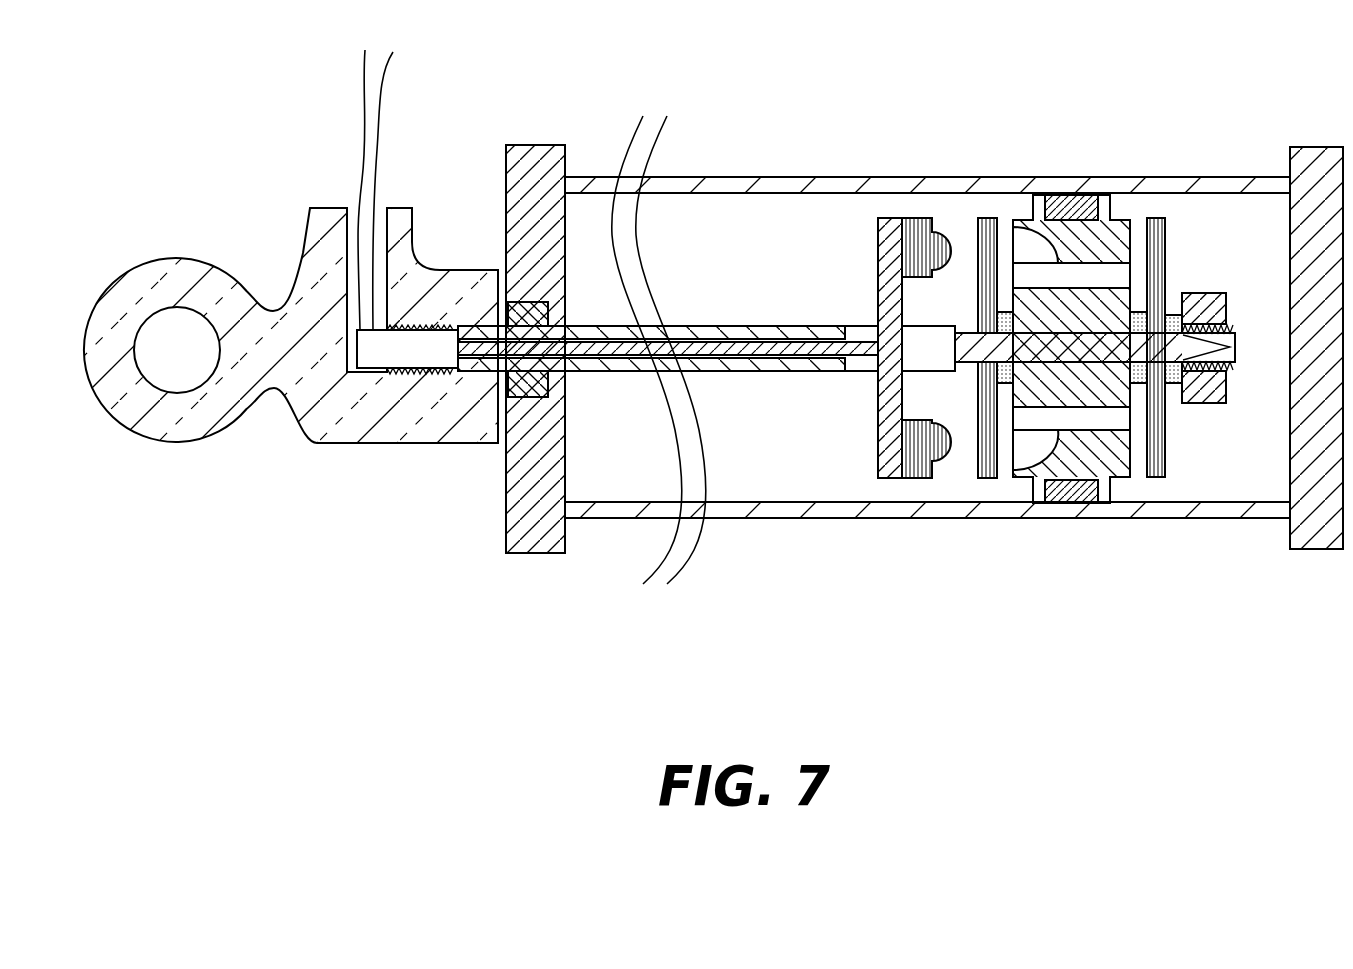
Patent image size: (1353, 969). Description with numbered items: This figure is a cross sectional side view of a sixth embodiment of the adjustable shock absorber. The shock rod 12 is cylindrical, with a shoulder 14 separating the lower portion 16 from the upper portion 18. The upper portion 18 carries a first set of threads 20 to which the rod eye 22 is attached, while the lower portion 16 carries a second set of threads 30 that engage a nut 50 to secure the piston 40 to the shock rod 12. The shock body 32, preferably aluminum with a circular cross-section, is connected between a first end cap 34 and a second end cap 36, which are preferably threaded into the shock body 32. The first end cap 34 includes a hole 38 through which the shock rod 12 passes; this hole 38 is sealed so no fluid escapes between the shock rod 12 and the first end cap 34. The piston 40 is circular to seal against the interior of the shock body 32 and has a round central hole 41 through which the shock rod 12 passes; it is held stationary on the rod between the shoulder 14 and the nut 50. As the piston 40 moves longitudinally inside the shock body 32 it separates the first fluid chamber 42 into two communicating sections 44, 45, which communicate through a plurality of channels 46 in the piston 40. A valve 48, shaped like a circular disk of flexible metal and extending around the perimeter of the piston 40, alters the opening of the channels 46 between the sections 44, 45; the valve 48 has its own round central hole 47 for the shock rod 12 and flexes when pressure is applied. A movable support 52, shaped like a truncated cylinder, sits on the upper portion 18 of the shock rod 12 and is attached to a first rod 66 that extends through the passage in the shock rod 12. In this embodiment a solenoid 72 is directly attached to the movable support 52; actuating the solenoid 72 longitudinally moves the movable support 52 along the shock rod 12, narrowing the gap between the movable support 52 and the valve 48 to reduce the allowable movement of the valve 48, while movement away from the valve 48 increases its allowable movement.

The shock rod 12 is at (701, 328).
The shoulder 14 is at (945, 372).
The lower portion 16 is at (1236, 350).
The upper portion 18 is at (880, 415).
The first set of threads 20 is at (430, 302).
The rod eye 22 is at (170, 258).
The second set of threads 30 is at (1212, 330).
The shock body 32 is at (705, 180).
The first end cap 34 is at (530, 145).
The second end cap 36 is at (1323, 156).
The hole 38 is at (556, 303).
The piston 40 is at (1131, 218).
The round central hole 41 is at (1076, 320).
The first fluid chamber 42 is at (704, 241).
The communicating section 44 is at (603, 490).
The communicating section 45 is at (1254, 492).
The channels 46 is at (1027, 247).
The round central hole 47 is at (1003, 385).
The valve 48 is at (988, 480).
The nut 50 is at (1196, 300).
The movable support 52 is at (905, 232).
The first rod 66 is at (591, 340).
The solenoid 72 is at (415, 360).